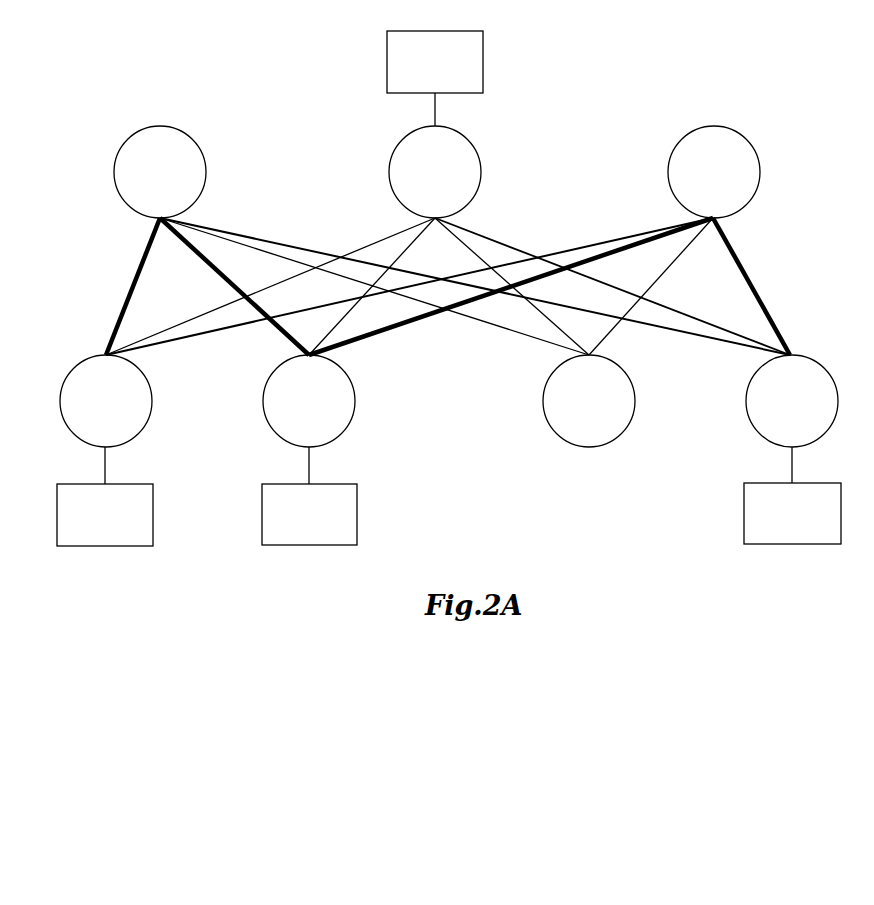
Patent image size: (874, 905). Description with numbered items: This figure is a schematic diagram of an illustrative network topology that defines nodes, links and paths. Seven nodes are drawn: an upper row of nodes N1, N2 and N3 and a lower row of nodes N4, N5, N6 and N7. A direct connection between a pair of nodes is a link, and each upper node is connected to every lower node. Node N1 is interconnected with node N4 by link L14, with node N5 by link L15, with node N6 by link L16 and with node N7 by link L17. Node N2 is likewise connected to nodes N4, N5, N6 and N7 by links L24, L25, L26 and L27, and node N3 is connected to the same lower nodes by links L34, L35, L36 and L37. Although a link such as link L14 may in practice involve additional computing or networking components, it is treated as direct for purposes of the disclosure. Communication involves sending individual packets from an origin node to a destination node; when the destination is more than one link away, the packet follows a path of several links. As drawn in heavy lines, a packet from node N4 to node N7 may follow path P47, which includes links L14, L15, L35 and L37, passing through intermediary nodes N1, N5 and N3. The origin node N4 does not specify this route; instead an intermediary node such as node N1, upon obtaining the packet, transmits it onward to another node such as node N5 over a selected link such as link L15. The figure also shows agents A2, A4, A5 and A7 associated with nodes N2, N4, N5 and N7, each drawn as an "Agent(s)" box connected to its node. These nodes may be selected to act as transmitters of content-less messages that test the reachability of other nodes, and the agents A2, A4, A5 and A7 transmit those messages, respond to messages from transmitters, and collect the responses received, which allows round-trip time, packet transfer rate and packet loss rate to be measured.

The node N1 is at (166, 172).
The node N2 is at (445, 172).
The node N3 is at (719, 172).
The node N4 is at (115, 401).
The node N5 is at (319, 401).
The node N6 is at (597, 401).
The node N7 is at (793, 400).
The agent A2 is at (451, 78).
The agent A4 is at (114, 496).
The agent A5 is at (320, 496).
The agent A7 is at (802, 495).
The link L14 is at (133, 286).
The link L15 is at (230, 286).
The link L16 is at (374, 286).
The link L17 is at (475, 286).
The link L24 is at (270, 286).
The link L25 is at (372, 286).
The link L26 is at (512, 286).
The link L27 is at (612, 286).
The link L34 is at (409, 284).
The link L35 is at (511, 286).
The link L36 is at (651, 286).
The link L37 is at (751, 286).
The path P47 is at (430, 287).